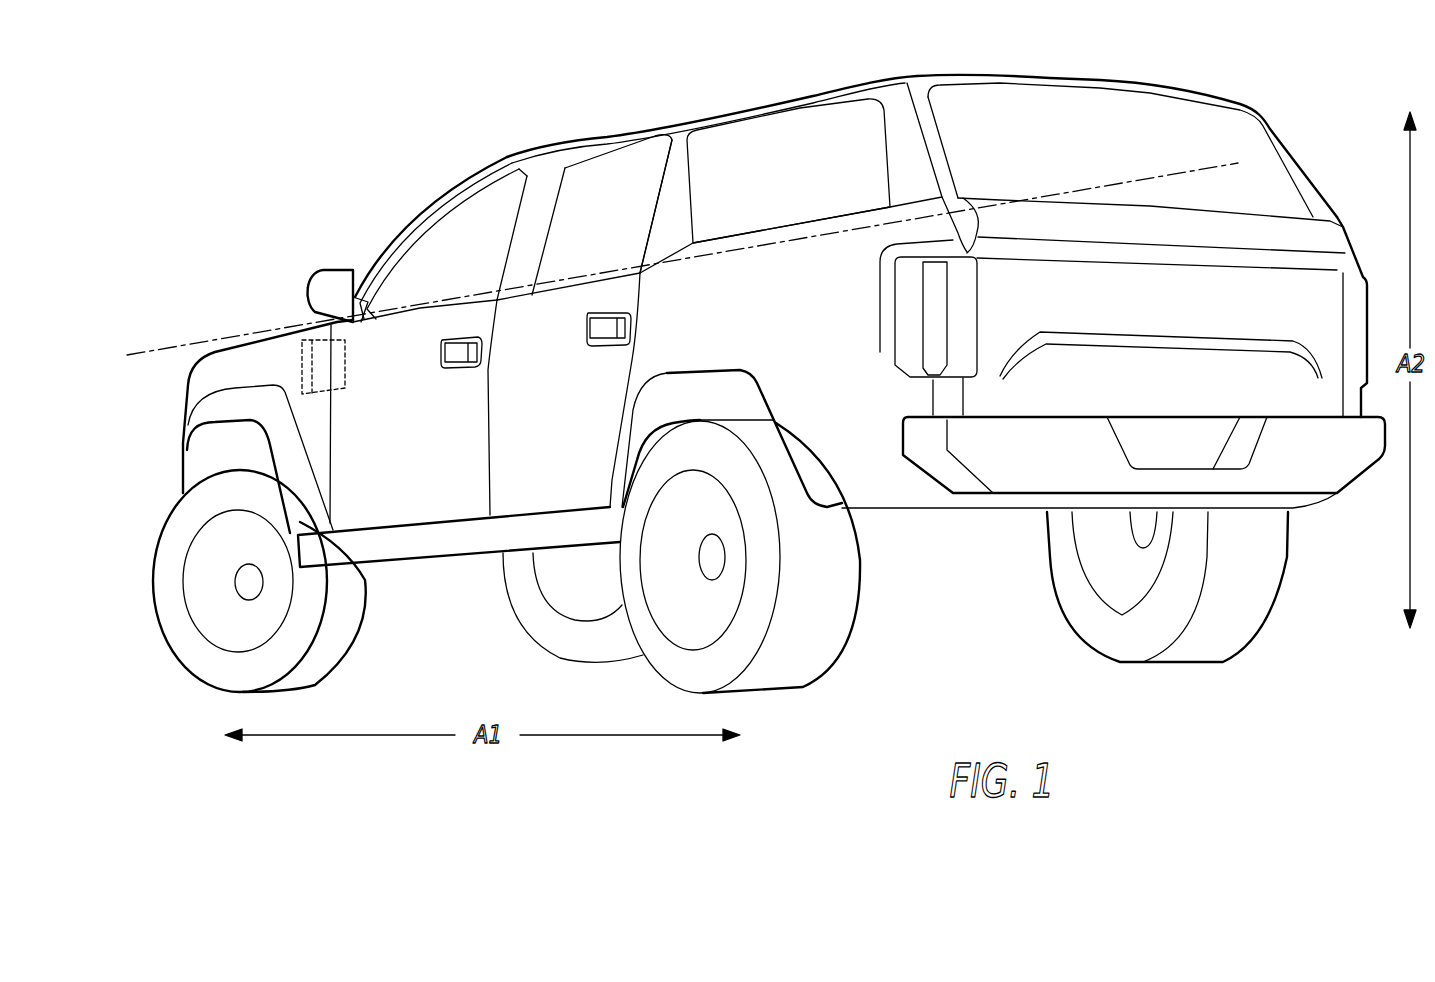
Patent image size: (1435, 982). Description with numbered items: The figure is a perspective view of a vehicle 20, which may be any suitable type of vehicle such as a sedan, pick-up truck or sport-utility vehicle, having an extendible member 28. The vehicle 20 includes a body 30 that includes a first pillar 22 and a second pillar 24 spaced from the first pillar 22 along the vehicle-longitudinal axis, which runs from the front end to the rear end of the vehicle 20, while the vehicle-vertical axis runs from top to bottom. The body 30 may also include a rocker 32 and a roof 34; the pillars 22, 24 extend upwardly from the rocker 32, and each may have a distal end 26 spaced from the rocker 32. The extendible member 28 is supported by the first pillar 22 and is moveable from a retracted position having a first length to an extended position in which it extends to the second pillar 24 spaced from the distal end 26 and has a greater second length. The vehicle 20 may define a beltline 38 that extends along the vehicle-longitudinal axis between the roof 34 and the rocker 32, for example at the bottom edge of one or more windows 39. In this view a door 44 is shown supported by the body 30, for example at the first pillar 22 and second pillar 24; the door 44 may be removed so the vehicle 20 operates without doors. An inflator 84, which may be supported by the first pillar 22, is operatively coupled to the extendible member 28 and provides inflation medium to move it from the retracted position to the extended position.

The vehicle 20 is at (432, 131).
The first pillar 22 is at (393, 243).
The second pillar 24 is at (537, 217).
The distal end 26 is at (440, 193).
The extendible member 28 is at (312, 326).
The body 30 is at (757, 300).
The rocker 32 is at (458, 538).
The roof 34 is at (550, 147).
The beltline 38 is at (167, 357).
The window 39 is at (483, 203).
The door 44 is at (410, 485).
The inflator 84 is at (297, 362).